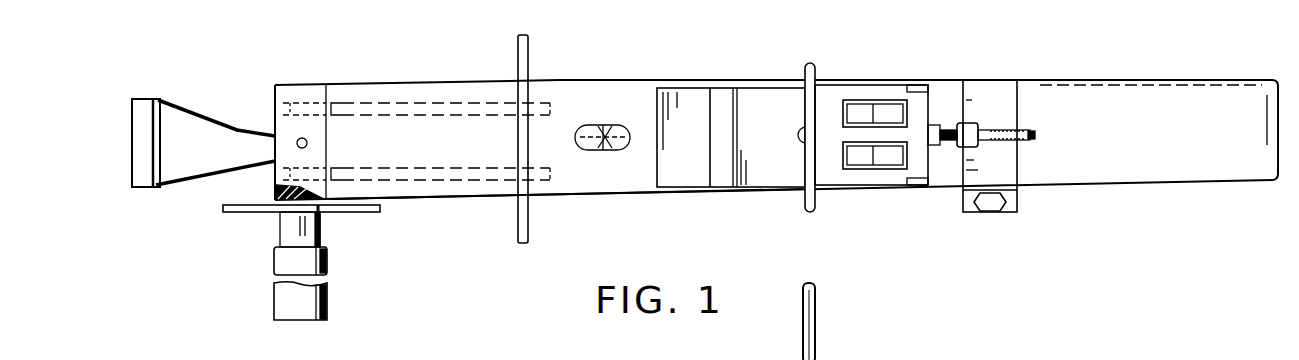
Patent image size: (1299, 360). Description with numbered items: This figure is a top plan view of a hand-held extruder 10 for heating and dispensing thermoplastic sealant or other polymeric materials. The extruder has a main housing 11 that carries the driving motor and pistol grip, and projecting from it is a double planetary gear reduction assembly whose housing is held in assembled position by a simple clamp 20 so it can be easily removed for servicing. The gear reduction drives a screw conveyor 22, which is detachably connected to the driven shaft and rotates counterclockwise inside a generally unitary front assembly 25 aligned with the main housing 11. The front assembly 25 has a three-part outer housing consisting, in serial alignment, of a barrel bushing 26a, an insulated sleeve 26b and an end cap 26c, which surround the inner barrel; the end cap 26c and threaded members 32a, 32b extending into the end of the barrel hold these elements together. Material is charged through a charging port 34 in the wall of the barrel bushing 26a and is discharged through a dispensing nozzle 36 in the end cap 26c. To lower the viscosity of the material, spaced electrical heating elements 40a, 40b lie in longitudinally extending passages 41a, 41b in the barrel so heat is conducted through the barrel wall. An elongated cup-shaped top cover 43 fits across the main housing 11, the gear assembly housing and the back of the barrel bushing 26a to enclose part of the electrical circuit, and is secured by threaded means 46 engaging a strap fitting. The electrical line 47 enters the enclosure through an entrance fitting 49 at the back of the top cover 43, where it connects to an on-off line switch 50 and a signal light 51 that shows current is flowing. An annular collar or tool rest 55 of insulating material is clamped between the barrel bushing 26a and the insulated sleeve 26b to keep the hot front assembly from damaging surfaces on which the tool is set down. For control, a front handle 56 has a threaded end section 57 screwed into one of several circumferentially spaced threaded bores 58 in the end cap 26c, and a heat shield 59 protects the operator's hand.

The hand-held extruder 10 is at (452, 66).
The main housing 11 is at (1073, 108).
The clamp 20 is at (1017, 182).
The screw conveyor 22 is at (612, 130).
The front assembly 25 is at (486, 200).
The barrel bushing 26a is at (645, 190).
The insulated sleeve 26b is at (445, 197).
The end cap 26c is at (274, 130).
The threaded member 32a is at (291, 104).
The threaded member 32b is at (281, 165).
The charging port 34 is at (590, 128).
The dispensing nozzle 36 is at (152, 186).
The electrical heating element 40a is at (399, 103).
The electrical heating element 40b is at (418, 172).
The longitudinally extending passage 41a is at (338, 108).
The longitudinally extending passage 41b is at (368, 166).
The top cover 43 is at (742, 95).
The threaded means 46 is at (803, 137).
The electrical line 47 is at (1003, 132).
The entrance fitting 49 is at (968, 126).
The on-off line switch 50 is at (860, 108).
The signal light 51 is at (865, 160).
The annular collar or tool rest 55 is at (528, 56).
The front handle 56 is at (285, 256).
The threaded end section 57 is at (275, 193).
The threaded bores 58 is at (307, 142).
The heat shield 59 is at (248, 208).